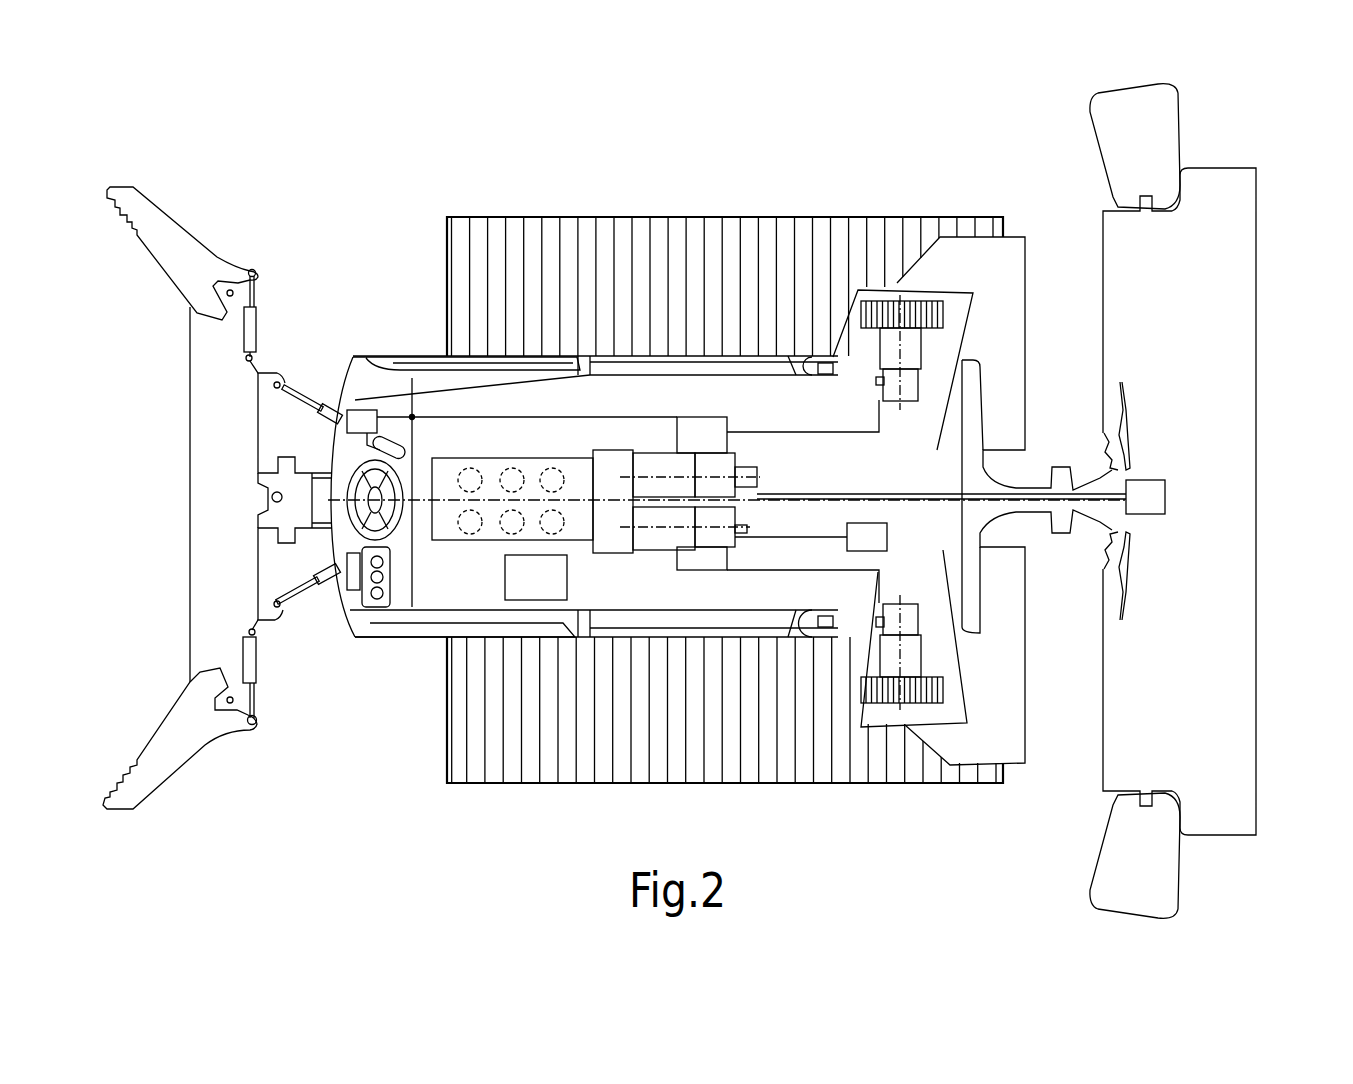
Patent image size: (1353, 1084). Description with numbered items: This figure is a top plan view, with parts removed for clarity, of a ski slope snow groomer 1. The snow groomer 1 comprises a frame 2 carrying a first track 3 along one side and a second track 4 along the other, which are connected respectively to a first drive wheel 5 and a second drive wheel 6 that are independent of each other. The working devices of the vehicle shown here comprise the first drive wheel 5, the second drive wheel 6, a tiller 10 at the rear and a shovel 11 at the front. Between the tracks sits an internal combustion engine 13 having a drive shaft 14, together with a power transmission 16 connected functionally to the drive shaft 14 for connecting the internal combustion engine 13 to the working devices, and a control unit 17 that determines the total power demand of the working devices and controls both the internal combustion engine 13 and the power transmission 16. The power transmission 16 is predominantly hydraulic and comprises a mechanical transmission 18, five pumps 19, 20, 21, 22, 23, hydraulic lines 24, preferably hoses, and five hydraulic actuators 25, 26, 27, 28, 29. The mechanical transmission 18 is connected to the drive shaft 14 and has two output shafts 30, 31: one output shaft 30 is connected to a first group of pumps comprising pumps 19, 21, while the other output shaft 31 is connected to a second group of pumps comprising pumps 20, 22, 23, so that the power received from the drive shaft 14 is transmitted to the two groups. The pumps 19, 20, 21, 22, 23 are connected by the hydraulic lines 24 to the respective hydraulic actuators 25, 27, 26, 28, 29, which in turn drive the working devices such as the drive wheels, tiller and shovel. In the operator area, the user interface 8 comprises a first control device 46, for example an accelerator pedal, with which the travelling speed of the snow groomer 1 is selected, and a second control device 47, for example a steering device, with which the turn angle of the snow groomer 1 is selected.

The ski slope snow groomer 1 is at (228, 797).
The frame 2 is at (905, 540).
The first track 3 is at (588, 245).
The second track 4 is at (547, 752).
The first drive wheel 5 is at (917, 298).
The second drive wheel 6 is at (893, 706).
The user interface 8 is at (346, 448).
The tiller 10 is at (1262, 330).
The shovel 11 is at (172, 476).
The internal combustion engine 13 is at (479, 552).
The drive shaft 14 is at (460, 502).
The power transmission 16 is at (563, 446).
The control unit 17 is at (502, 590).
The mechanical transmission 18 is at (616, 522).
The pump 19 is at (668, 538).
The pump 20 is at (658, 460).
The pump 21 is at (716, 538).
The pump 22 is at (760, 483).
The pump 23 is at (720, 468).
The hydraulic lines 24 is at (593, 448).
The hydraulic actuator 25 is at (925, 627).
The hydraulic actuator 26 is at (863, 555).
The hydraulic actuator 27 is at (897, 400).
The hydraulic actuator 28 is at (1172, 490).
The hydraulic actuator 29 is at (344, 414).
The output shaft 30 is at (645, 540).
The output shaft 31 is at (637, 473).
The first control device 46 is at (393, 436).
The second control device 47 is at (335, 586).